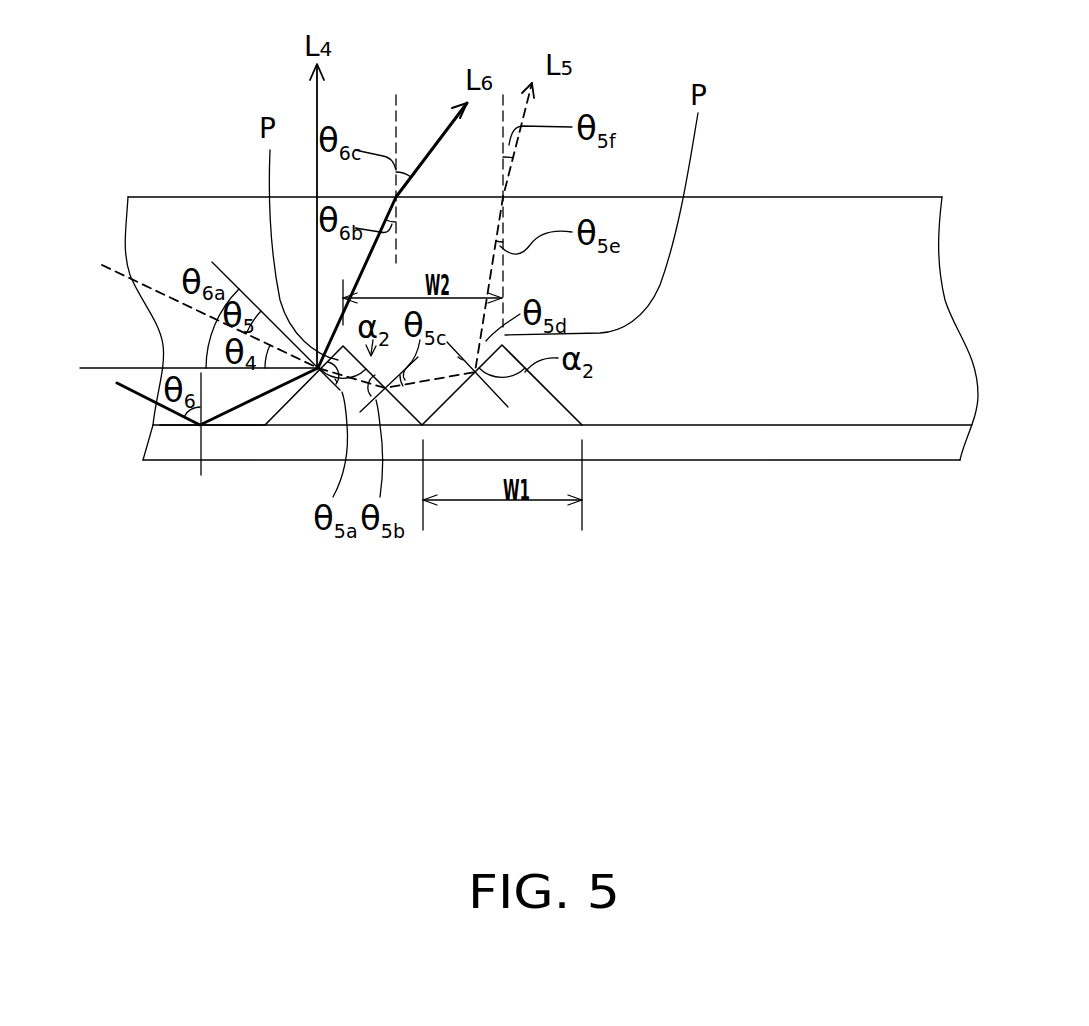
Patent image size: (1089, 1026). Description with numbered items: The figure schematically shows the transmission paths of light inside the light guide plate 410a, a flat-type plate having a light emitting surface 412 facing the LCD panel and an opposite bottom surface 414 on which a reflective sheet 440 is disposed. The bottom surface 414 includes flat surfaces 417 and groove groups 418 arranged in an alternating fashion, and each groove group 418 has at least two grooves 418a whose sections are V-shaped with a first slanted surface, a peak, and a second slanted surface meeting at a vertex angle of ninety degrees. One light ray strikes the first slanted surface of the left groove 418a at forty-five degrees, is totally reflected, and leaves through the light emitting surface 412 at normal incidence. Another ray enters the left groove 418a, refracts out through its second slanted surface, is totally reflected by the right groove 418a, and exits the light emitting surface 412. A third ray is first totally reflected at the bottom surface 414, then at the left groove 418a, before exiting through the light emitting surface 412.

The light guide plate 410a is at (897, 298).
The light emitting surface 412 is at (197, 184).
The bottom surface 414 is at (465, 718).
The flat surface 417 is at (216, 430).
The groove group 418 is at (558, 655).
The groove 418a is at (290, 402).
The reflective sheet 440 is at (943, 438).